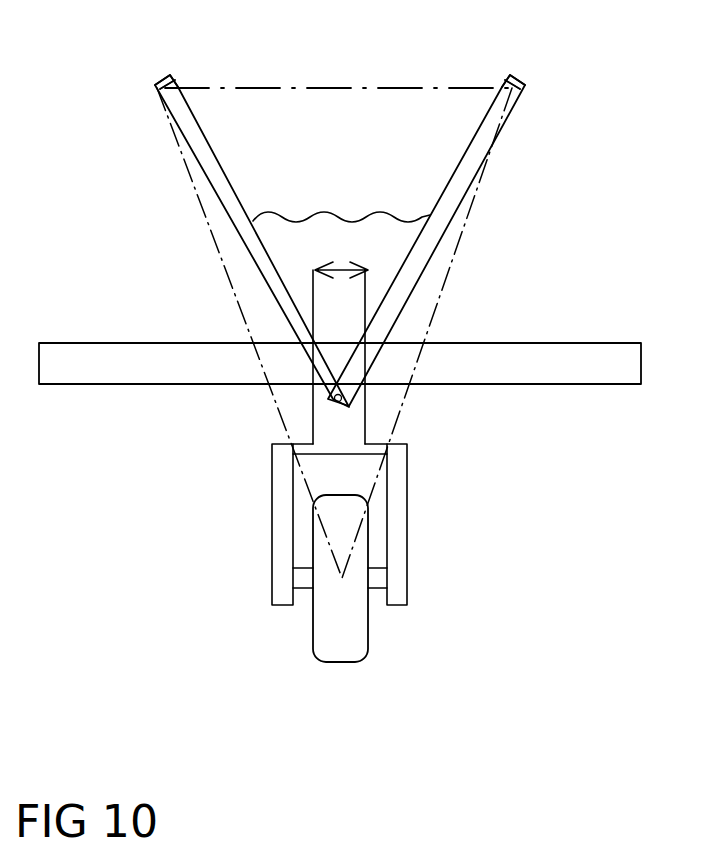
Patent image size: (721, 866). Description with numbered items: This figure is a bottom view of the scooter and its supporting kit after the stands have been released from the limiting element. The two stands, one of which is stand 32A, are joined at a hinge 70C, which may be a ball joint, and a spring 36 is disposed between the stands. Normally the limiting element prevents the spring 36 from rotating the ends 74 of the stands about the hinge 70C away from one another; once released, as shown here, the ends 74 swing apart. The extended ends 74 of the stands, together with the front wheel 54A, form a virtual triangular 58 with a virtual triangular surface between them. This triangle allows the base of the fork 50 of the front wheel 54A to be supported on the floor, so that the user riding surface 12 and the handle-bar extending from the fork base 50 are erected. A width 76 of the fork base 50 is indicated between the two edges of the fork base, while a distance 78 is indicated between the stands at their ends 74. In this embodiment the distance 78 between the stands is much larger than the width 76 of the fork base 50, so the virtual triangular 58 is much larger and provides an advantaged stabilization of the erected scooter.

The riding surface 12 is at (558, 363).
The stand 32A is at (455, 193).
The spring 36 is at (389, 213).
The base of fork 50 is at (332, 308).
The front wheel 54A is at (327, 637).
The virtual triangular 58 is at (408, 408).
The hinge 70C is at (334, 398).
The ends of stands 74 is at (160, 85).
The width of fork base 76 is at (338, 268).
The distance between stands 78 is at (343, 88).